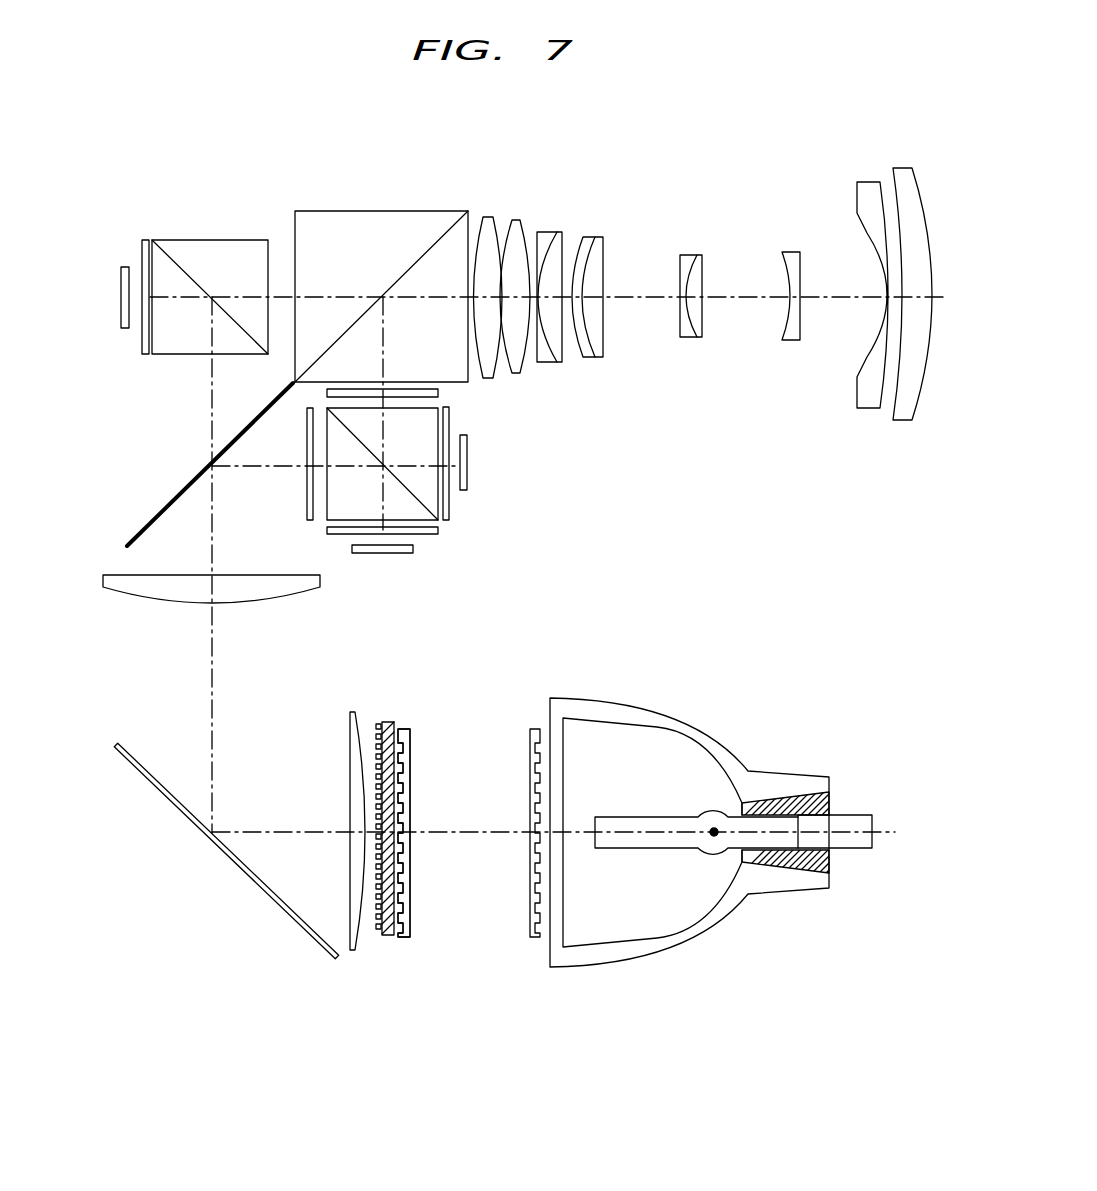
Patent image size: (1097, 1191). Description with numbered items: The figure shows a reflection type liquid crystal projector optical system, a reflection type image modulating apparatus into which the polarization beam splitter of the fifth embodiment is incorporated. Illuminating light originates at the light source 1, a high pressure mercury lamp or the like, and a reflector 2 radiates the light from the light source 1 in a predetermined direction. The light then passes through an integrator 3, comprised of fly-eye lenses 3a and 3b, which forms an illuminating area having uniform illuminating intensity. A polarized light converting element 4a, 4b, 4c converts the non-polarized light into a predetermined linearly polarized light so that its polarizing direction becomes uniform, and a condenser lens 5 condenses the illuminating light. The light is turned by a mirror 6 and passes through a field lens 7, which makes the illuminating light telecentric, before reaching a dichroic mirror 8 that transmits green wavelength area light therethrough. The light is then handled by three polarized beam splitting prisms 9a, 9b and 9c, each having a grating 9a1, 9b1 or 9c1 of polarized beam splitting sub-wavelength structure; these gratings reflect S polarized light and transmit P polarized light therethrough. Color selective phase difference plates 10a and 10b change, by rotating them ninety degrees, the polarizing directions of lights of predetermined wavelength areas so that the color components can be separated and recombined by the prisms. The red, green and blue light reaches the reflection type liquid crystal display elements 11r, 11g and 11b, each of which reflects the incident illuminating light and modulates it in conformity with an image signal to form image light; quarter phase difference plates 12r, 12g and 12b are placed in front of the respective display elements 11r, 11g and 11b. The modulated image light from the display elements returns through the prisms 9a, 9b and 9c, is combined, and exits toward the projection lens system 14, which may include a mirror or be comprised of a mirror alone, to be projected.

The light source 1 is at (714, 834).
The reflector 2 is at (697, 743).
The integrator 3 is at (469, 796).
The fly-eye lens 3a is at (530, 737).
The fly-eye lens 3b is at (413, 738).
The polarized light converting element 4a is at (390, 935).
The polarized light converting element 4b is at (377, 930).
The polarized light converting element 4c is at (411, 917).
The condenser lens 5 is at (357, 947).
The mirror 6 is at (163, 797).
The field lens 7 is at (125, 590).
The dichroic mirror 8 is at (158, 507).
The polarized beam splitting prism 9a is at (237, 240).
The grating 9a1 is at (173, 257).
The polarized beam splitting prism 9b is at (430, 472).
The grating 9b1 is at (423, 497).
The polarized beam splitting prism 9c is at (320, 211).
The grating 9c1 is at (445, 230).
The color selective phase difference plate 10a is at (303, 500).
The color selective phase difference plate 10b is at (438, 393).
The reflection type liquid crystal display element 11g is at (120, 300).
The reflection type liquid crystal display element 11b is at (468, 455).
The reflection type liquid crystal display element 11r is at (382, 554).
The quarter phase difference plate 12g is at (147, 240).
The quarter phase difference plate 12b is at (450, 414).
The quarter phase difference plate 12r is at (425, 535).
The projection lens system 14 is at (691, 268).